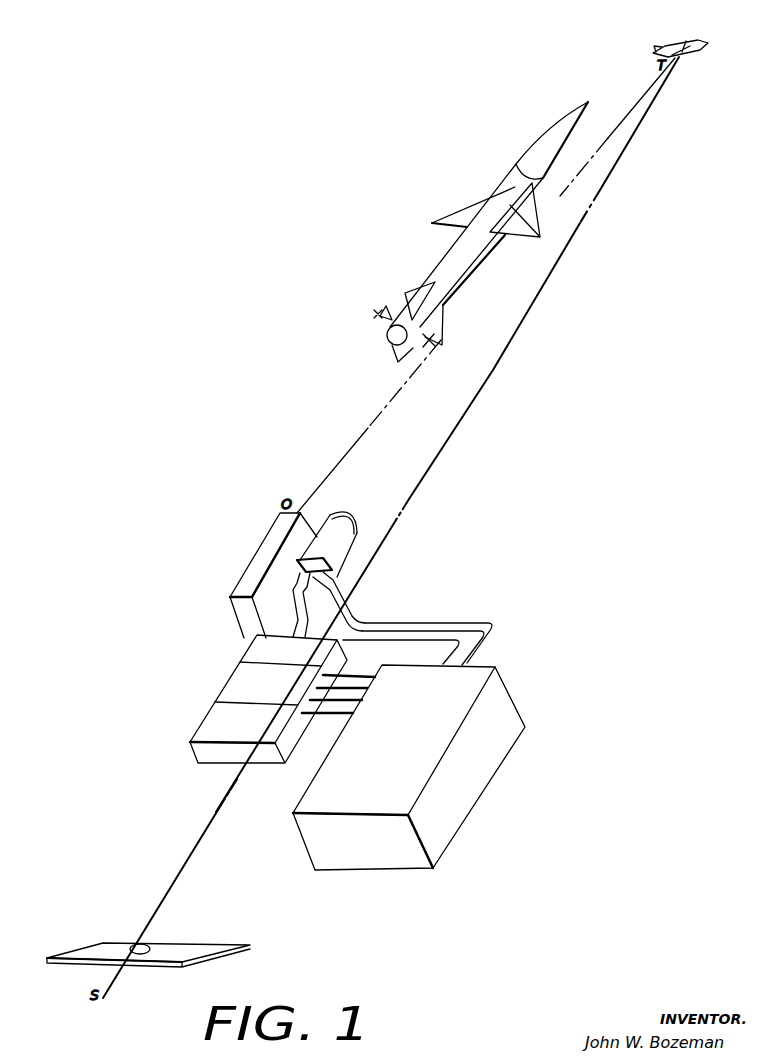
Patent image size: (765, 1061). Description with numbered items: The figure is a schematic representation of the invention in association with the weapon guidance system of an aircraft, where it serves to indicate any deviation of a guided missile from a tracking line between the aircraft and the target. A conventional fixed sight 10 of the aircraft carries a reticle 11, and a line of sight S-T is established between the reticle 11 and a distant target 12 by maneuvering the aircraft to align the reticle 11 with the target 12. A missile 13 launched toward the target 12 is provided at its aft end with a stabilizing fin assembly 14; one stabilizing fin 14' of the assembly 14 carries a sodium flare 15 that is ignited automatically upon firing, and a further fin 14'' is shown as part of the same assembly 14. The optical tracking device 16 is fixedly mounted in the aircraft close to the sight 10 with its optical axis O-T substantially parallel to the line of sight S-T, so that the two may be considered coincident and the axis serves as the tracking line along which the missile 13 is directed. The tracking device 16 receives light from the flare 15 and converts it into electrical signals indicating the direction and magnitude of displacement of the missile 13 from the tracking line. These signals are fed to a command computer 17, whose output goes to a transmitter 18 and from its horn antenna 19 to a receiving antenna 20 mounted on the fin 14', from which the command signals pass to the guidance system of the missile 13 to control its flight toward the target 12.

The fixed sight 10 is at (103, 940).
The reticle 11 is at (142, 947).
The target 12 is at (701, 44).
The missile 13 is at (518, 168).
The stabilizing fin assembly 14 is at (472, 251).
The stabilizing fin 14' is at (396, 294).
The missile fin 14'' is at (465, 290).
The sodium flare 15 is at (377, 312).
The optical tracking device 16 is at (263, 547).
The command computer 17 is at (468, 790).
The transmitter 18 is at (242, 695).
The horn antenna 19 is at (335, 548).
The receiving antenna 20 is at (430, 349).